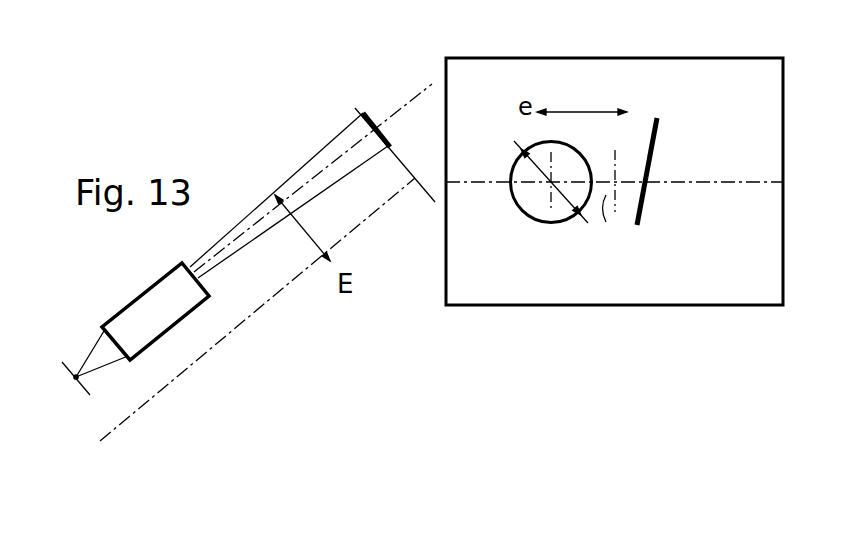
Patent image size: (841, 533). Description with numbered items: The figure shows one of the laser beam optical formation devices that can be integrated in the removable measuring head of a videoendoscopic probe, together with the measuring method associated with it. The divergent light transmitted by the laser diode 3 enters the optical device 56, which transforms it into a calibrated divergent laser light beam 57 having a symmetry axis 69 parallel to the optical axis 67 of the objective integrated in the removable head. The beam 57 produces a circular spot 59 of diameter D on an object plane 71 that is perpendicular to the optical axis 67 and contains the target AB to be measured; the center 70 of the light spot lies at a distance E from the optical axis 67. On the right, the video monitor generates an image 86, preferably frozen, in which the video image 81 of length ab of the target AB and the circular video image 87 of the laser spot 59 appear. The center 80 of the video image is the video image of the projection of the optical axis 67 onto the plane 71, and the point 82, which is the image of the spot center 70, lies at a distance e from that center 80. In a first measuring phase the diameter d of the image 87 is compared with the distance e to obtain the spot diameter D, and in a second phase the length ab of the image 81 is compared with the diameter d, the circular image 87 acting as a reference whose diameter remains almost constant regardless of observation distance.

The laser diode 3 is at (76, 377).
The optical device 56 is at (176, 285).
The divergent laser light beam 57 is at (318, 153).
The circular spot 59 is at (386, 130).
The optical axis 67 is at (198, 360).
The symmetry axis 69 is at (420, 97).
The center of the light spot 70 is at (367, 135).
The object plane 71 is at (432, 200).
The center of the video image 80 is at (553, 186).
The video image 81 is at (614, 175).
The center of the laser spot image 82 is at (551, 183).
The image 86 is at (674, 57).
The circular video image of the laser spot 87 is at (513, 198).